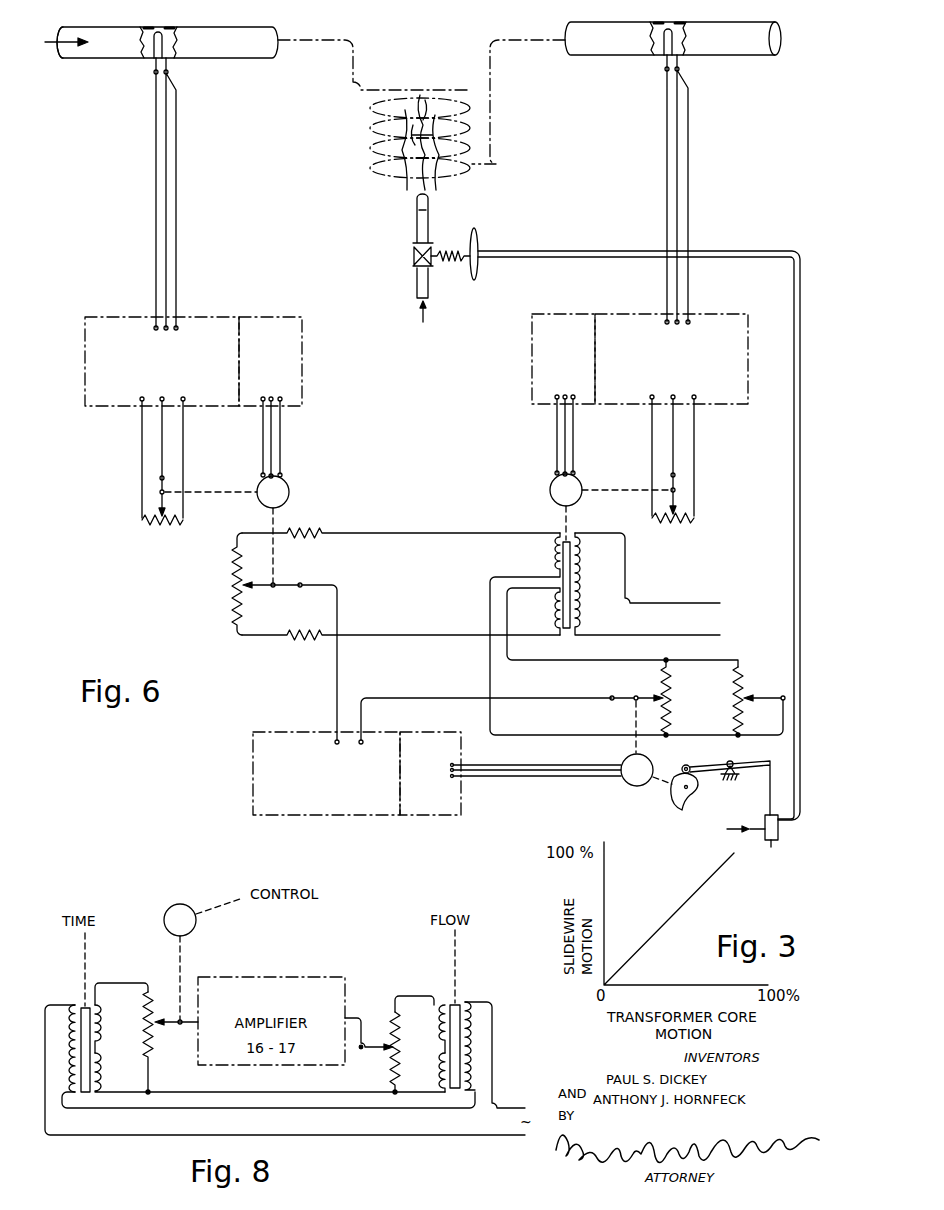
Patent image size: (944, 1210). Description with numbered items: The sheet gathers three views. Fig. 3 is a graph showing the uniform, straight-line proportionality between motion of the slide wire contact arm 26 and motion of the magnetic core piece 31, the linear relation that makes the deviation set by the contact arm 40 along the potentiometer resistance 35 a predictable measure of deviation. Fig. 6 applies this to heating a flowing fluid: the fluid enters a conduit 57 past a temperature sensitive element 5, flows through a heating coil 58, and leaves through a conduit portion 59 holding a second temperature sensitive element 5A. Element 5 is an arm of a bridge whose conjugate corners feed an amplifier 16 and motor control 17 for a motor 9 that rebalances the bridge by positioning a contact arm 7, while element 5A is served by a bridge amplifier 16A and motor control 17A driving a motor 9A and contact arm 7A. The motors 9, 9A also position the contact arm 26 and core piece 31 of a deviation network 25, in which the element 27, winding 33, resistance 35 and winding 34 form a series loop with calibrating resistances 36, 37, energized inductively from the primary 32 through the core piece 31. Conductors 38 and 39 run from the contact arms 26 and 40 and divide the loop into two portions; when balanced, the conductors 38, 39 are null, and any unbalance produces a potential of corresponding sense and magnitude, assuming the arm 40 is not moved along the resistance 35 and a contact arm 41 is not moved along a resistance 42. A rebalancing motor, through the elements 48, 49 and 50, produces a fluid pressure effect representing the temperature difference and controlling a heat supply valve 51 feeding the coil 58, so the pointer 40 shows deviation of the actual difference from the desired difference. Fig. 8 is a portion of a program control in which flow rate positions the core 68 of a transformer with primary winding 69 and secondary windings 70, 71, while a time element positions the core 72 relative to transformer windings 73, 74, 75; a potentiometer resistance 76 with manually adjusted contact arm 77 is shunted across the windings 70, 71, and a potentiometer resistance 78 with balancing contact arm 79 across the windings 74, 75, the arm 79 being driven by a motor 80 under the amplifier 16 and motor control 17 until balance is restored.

In FIG. 6, the temperature sensitive element 5 is at (150, 62).
In FIG. 6, the conduit 57 is at (233, 58).
In FIG. 6, the temperature sensitive element 5A is at (662, 60).
In FIG. 6, the conduit portion 59 is at (738, 55).
In FIG. 6, the heating coil 58 is at (370, 138).
In FIG. 6, the heat supply valve 51 is at (461, 291).
In FIG. 6, the amplifier 16 is at (242, 566).
In FIG. 6, the motor control 17 is at (430, 566).
In FIG. 6, the bridge amplifier 16A is at (671, 359).
In FIG. 6, the motor control 17A is at (563, 359).
In FIG. 6, the contact arm 7 is at (152, 526).
In FIG. 6, the contact arm 7A is at (668, 524).
In FIG. 6, the motor 9 is at (289, 490).
In FIG. 6, the motor 9A is at (551, 489).
In FIG. 6, the calibrating resistance 36 is at (308, 531).
In FIG. 6, the calibrating resistance 37 is at (304, 641).
In FIG. 6, the element 27 is at (232, 573).
In FIG. 6, the contact arm 26 is at (263, 586).
In FIG. 6, the deviation network 25 is at (417, 590).
In FIG. 6, the conductor 38 is at (337, 661).
In FIG. 6, the conductor 39 is at (405, 697).
In FIG. 6, the contact arm 40 is at (610, 697).
In FIG. 6, the magnetic core piece 31 is at (571, 630).
In FIG. 6, the primary 32 is at (651, 584).
In FIG. 6, the winding 33 is at (636, 634).
In FIG. 6, the winding 34 is at (622, 627).
In FIG. 6, the potentiometer resistance 35 is at (664, 690).
In FIG. 6, the resistance 42 is at (734, 694).
In FIG. 6, the contact arm 41 is at (783, 695).
In FIG. 6, the element 48 is at (678, 801).
In FIG. 6, the element 49 is at (692, 767).
In FIG. 6, the element 50 is at (766, 813).
In FIG. 8, the motor 80 is at (174, 905).
In FIG. 8, the core 72 is at (85, 1007).
In FIG. 8, the transformer winding 73 is at (63, 1013).
In FIG. 8, the transformer winding 74 is at (121, 1018).
In FIG. 8, the transformer winding 75 is at (270, 1072).
In FIG. 8, the potentiometer resistance 78 is at (152, 1050).
In FIG. 8, the balancing contact arm 79 is at (168, 1026).
In FIG. 8, the potentiometer resistance 76 is at (390, 1026).
In FIG. 8, the manually adjusted contact arm 77 is at (376, 1052).
In FIG. 8, the secondary winding 70 is at (429, 1029).
In FIG. 8, the secondary winding 71 is at (430, 1072).
In FIG. 8, the core 68 is at (458, 1004).
In FIG. 8, the primary winding 69 is at (481, 1036).